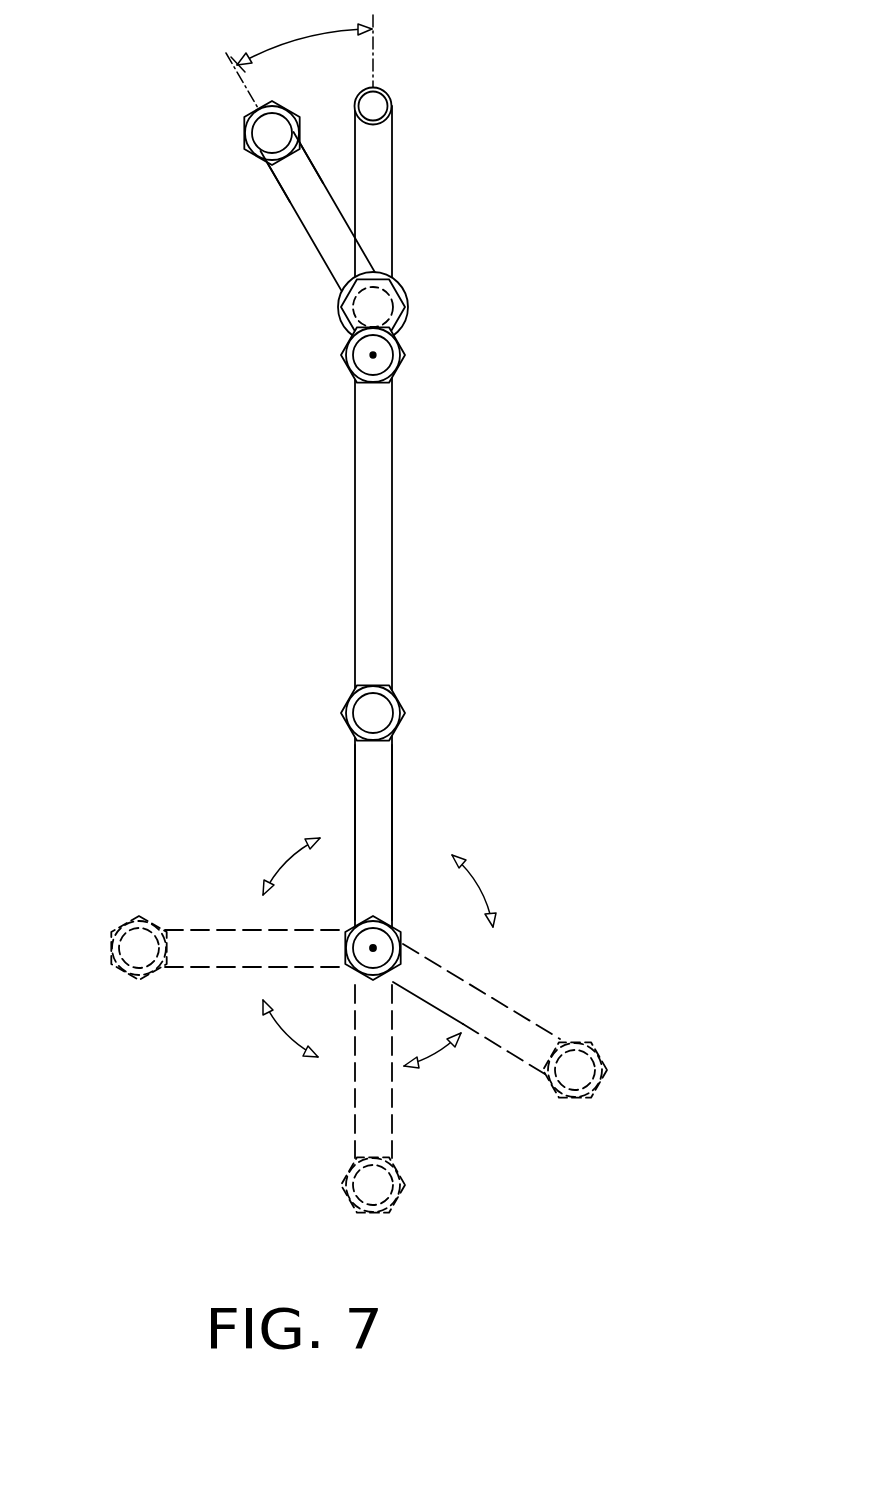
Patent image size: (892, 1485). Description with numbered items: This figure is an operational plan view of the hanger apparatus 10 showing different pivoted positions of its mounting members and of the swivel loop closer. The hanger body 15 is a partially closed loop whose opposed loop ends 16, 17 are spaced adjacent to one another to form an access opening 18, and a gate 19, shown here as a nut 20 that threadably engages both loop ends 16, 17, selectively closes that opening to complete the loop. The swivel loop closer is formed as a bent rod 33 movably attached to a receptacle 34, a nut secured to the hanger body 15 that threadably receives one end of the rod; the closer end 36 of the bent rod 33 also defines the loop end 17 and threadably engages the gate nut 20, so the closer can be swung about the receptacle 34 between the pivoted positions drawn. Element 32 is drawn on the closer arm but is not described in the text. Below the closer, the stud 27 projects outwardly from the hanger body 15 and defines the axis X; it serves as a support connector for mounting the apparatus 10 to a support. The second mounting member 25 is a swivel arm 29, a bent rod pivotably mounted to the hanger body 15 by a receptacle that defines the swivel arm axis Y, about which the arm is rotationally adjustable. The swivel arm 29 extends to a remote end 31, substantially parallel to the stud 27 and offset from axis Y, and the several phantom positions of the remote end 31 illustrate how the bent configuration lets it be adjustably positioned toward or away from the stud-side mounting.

The apparatus 10 is at (477, 585).
The hanger body 15 is at (394, 545).
The loop end 16 is at (378, 105).
The loop end 17 is at (297, 133).
The access opening 18 is at (323, 128).
The gate 19 is at (243, 119).
The nut 20 is at (298, 115).
The second mounting member 25 is at (407, 349).
The stud 27 is at (360, 362).
The swivel arm 29 is at (399, 790).
The remote end 31 is at (380, 717).
The pivoting arm 32 is at (283, 199).
The bent rod 33 is at (325, 230).
The receptacle 34 is at (402, 297).
The closer end 36 is at (265, 135).
The axis X is at (373, 355).
The swivel arm axis Y is at (373, 948).